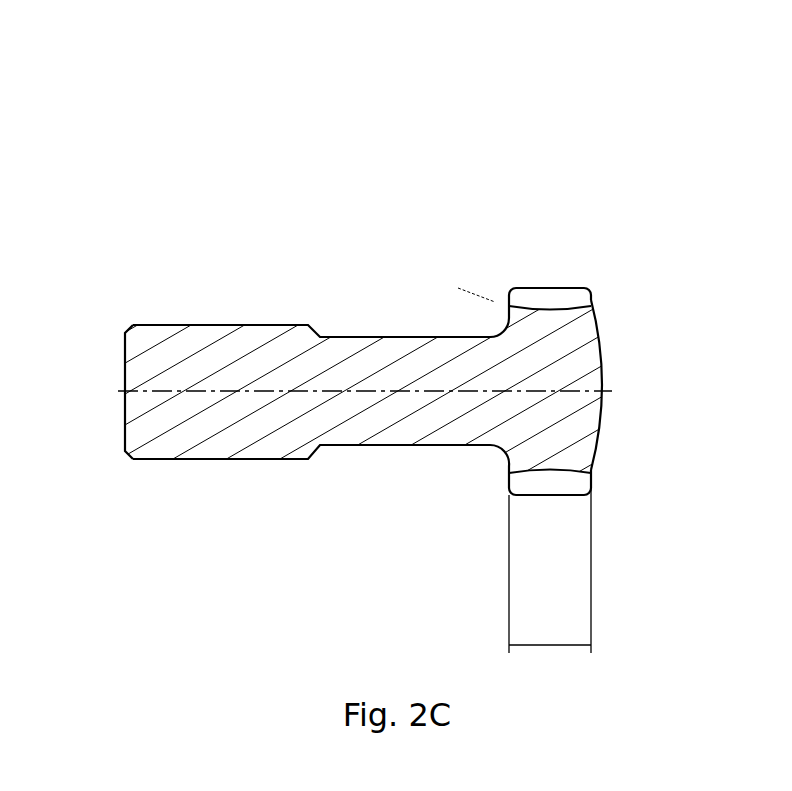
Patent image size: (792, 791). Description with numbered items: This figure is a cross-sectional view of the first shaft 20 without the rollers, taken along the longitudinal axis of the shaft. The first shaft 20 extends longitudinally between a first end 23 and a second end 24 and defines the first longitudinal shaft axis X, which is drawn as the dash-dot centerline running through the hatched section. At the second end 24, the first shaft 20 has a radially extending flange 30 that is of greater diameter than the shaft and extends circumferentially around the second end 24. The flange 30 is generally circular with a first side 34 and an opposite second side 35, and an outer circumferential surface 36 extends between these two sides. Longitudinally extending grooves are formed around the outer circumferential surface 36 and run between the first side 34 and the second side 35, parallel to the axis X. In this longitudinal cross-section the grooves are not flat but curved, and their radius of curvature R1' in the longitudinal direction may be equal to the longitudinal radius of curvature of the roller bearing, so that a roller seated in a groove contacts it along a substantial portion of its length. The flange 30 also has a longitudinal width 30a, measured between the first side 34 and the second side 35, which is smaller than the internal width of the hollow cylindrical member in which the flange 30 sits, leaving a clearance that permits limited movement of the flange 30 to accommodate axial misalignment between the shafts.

The first shaft 20 is at (368, 353).
The first end 23 is at (119, 348).
The flange 30 is at (554, 343).
The second end 24 is at (615, 366).
The second side 35 is at (601, 463).
The outer circumferential surface 36 is at (571, 271).
The first side 34 is at (500, 474).
The longitudinal width 30a is at (550, 584).
The first longitudinal shaft axis X is at (147, 401).
The radius of curvature R1' is at (533, 180).